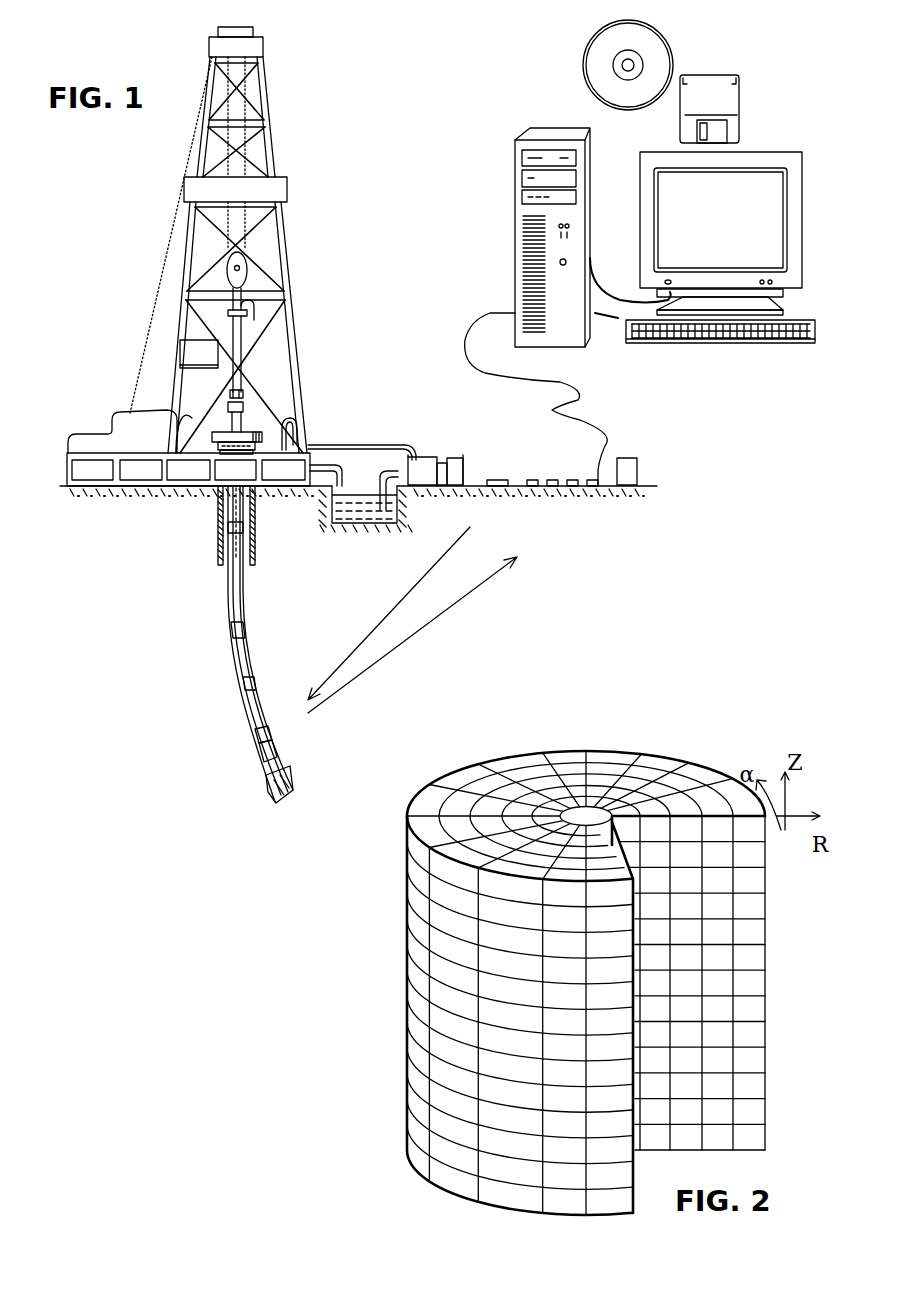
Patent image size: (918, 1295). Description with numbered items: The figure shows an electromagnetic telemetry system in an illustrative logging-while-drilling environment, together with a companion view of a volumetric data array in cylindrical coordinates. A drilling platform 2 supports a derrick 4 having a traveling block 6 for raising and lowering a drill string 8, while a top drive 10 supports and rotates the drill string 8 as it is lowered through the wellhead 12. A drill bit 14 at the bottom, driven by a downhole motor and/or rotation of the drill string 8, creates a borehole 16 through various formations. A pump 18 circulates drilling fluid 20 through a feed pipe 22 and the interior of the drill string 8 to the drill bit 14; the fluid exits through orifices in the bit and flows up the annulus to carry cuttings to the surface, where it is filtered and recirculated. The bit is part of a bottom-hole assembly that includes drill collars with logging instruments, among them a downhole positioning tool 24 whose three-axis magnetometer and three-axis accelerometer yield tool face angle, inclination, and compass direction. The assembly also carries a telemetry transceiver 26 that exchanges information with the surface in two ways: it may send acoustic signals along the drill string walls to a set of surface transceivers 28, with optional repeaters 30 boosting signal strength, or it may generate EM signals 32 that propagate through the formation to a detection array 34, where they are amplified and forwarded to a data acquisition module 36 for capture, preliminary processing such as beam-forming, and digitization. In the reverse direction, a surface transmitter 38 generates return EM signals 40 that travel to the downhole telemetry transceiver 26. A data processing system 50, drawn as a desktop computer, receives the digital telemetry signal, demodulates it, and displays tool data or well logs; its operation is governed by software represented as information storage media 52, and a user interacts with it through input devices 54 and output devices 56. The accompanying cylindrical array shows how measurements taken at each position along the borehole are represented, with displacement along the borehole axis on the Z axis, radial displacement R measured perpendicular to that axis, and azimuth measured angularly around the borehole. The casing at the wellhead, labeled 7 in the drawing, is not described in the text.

The drilling platform 2 is at (67, 458).
The derrick 4 is at (273, 148).
The traveling block 6 is at (247, 263).
The casing / wellhead 7 is at (228, 572).
The drill string 8 is at (241, 610).
The top drive 10 is at (237, 332).
The wellhead 12 is at (255, 432).
The drill bit 14 is at (289, 775).
The borehole 16 is at (252, 617).
The pump 18 is at (418, 462).
The drilling fluid 20 is at (345, 512).
The feed pipe 22 is at (372, 446).
The downhole positioning tool 24 is at (262, 758).
The telemetry transceiver 26 is at (254, 735).
The surface transceivers 28 is at (243, 395).
The repeaters 30 is at (232, 637).
The EM signals 32 is at (373, 663).
The detection array 34 is at (528, 474).
The data acquisition module 36 is at (632, 458).
The surface transmitter 38 is at (502, 480).
The return EM signals 40 is at (353, 648).
The data processing system 50 is at (594, 262).
The information storage media 52 is at (695, 75).
The input devices 54 is at (790, 345).
The output devices 56 is at (790, 288).